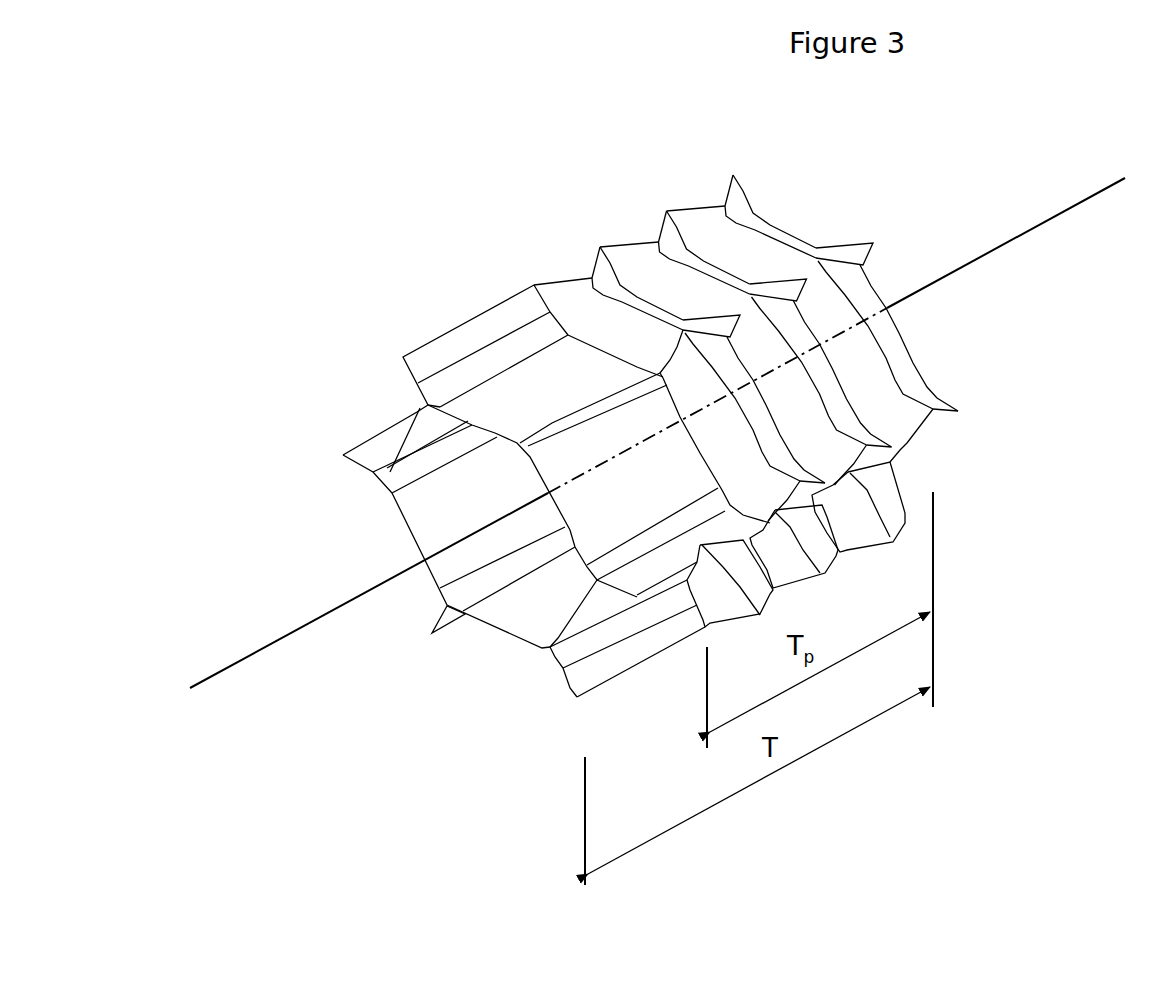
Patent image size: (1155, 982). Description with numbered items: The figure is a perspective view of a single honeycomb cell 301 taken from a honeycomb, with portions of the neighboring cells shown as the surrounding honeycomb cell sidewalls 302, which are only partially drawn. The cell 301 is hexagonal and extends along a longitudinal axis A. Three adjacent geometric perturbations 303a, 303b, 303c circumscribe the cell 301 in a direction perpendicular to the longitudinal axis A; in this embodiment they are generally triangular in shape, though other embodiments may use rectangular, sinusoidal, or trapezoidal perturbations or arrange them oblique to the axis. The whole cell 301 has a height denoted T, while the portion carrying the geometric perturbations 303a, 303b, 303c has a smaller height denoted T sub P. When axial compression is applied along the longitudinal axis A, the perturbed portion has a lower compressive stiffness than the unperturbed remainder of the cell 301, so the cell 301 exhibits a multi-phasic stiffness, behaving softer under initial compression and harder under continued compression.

The honeycomb cell 301 is at (361, 368).
The honeycomb cell sidewalls 302 is at (443, 355).
The geometric perturbation 303a is at (592, 280).
The geometric perturbation 303b is at (658, 240).
The geometric perturbation 303c is at (727, 218).
The longitudinal axis A is at (657, 430).